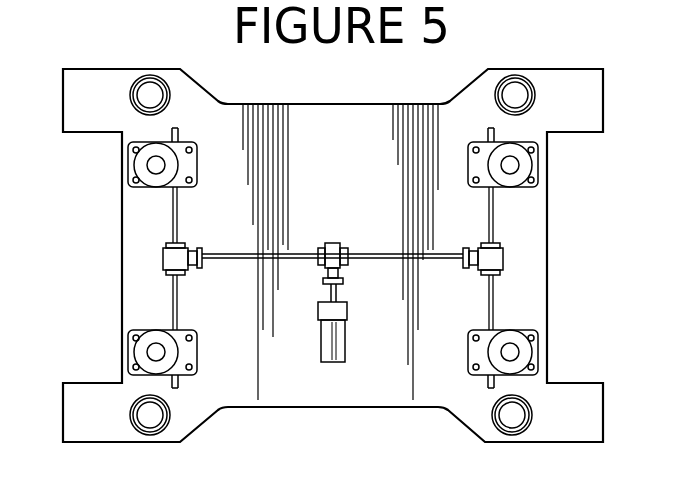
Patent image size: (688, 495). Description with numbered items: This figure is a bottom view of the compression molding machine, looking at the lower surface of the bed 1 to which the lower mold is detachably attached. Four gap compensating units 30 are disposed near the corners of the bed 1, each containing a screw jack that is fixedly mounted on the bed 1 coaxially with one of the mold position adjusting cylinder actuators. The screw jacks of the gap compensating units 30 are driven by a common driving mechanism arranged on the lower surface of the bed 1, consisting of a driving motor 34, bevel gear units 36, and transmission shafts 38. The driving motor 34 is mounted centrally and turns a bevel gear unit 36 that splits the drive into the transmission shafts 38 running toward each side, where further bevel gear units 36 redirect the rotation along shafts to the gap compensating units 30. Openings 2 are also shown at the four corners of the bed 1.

The bed 1 is at (532, 243).
The mounting holes 2 is at (157, 95).
The gap compensating units 30 is at (148, 167).
The driving motor 34 is at (348, 339).
The bevel gear units 36 is at (197, 251).
The transmission shafts 38 is at (179, 291).